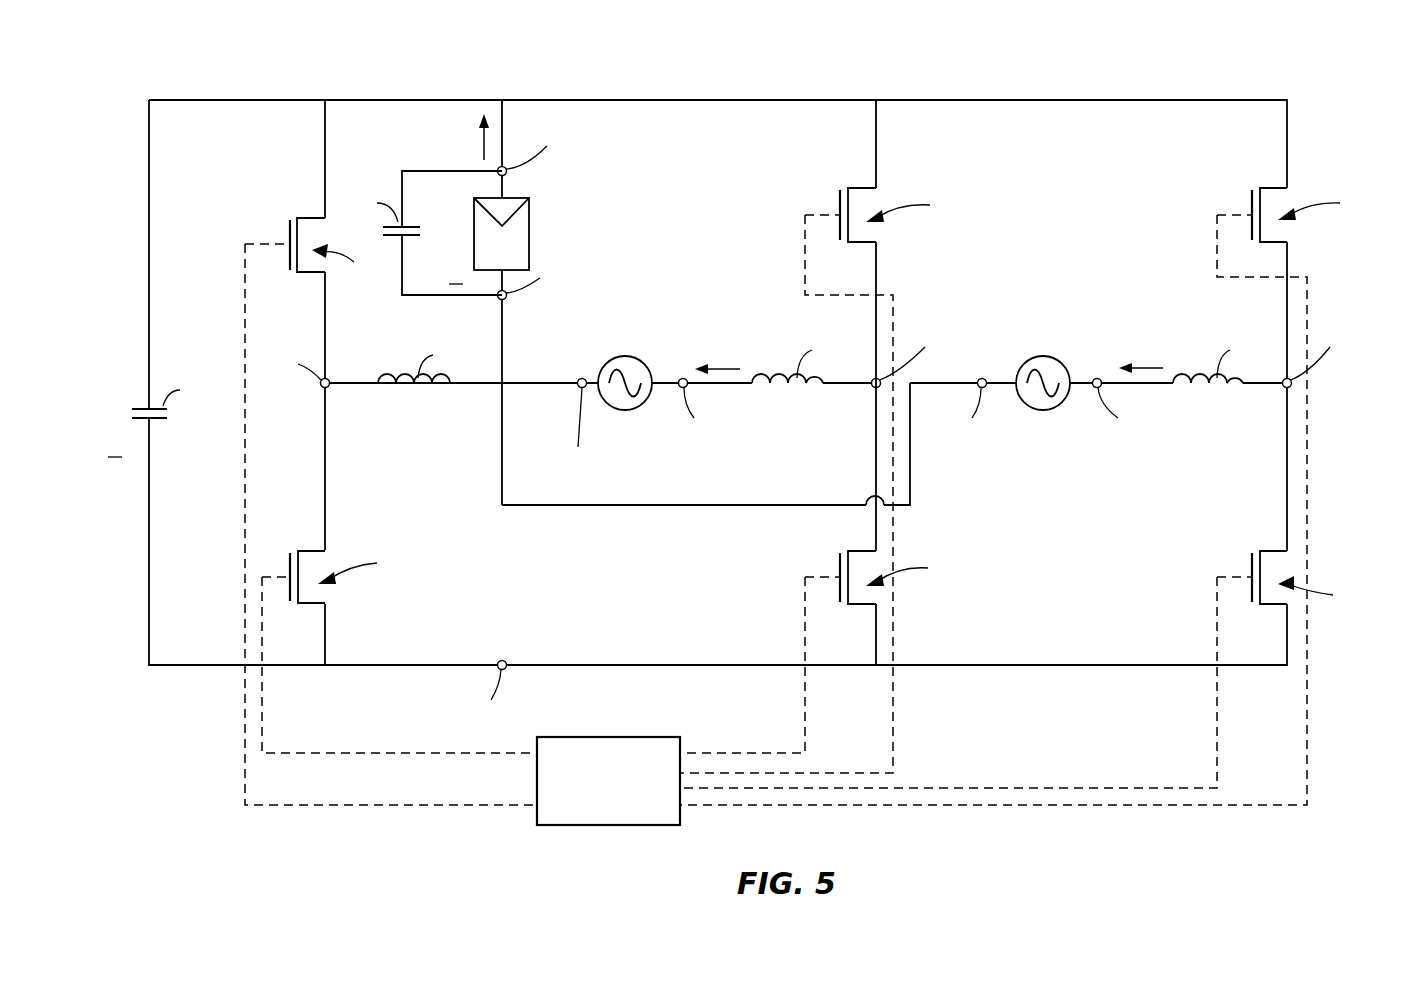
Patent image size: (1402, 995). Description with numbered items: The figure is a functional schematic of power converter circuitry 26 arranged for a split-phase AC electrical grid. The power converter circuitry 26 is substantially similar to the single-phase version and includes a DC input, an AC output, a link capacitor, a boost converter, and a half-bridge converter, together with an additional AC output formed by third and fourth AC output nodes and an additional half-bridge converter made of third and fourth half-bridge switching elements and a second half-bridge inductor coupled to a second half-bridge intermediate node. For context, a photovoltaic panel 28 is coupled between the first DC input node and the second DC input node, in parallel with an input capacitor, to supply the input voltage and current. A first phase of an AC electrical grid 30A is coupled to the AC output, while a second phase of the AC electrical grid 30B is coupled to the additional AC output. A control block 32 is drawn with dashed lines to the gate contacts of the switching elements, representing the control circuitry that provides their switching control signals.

The power converter circuitry 26 is at (962, 40).
The photovoltaic panel 28 is at (530, 233).
The first phase of an AC electrical grid 30A is at (630, 410).
The second phase of the AC electrical grid 30B is at (1047, 410).
The controller 32 is at (622, 809).